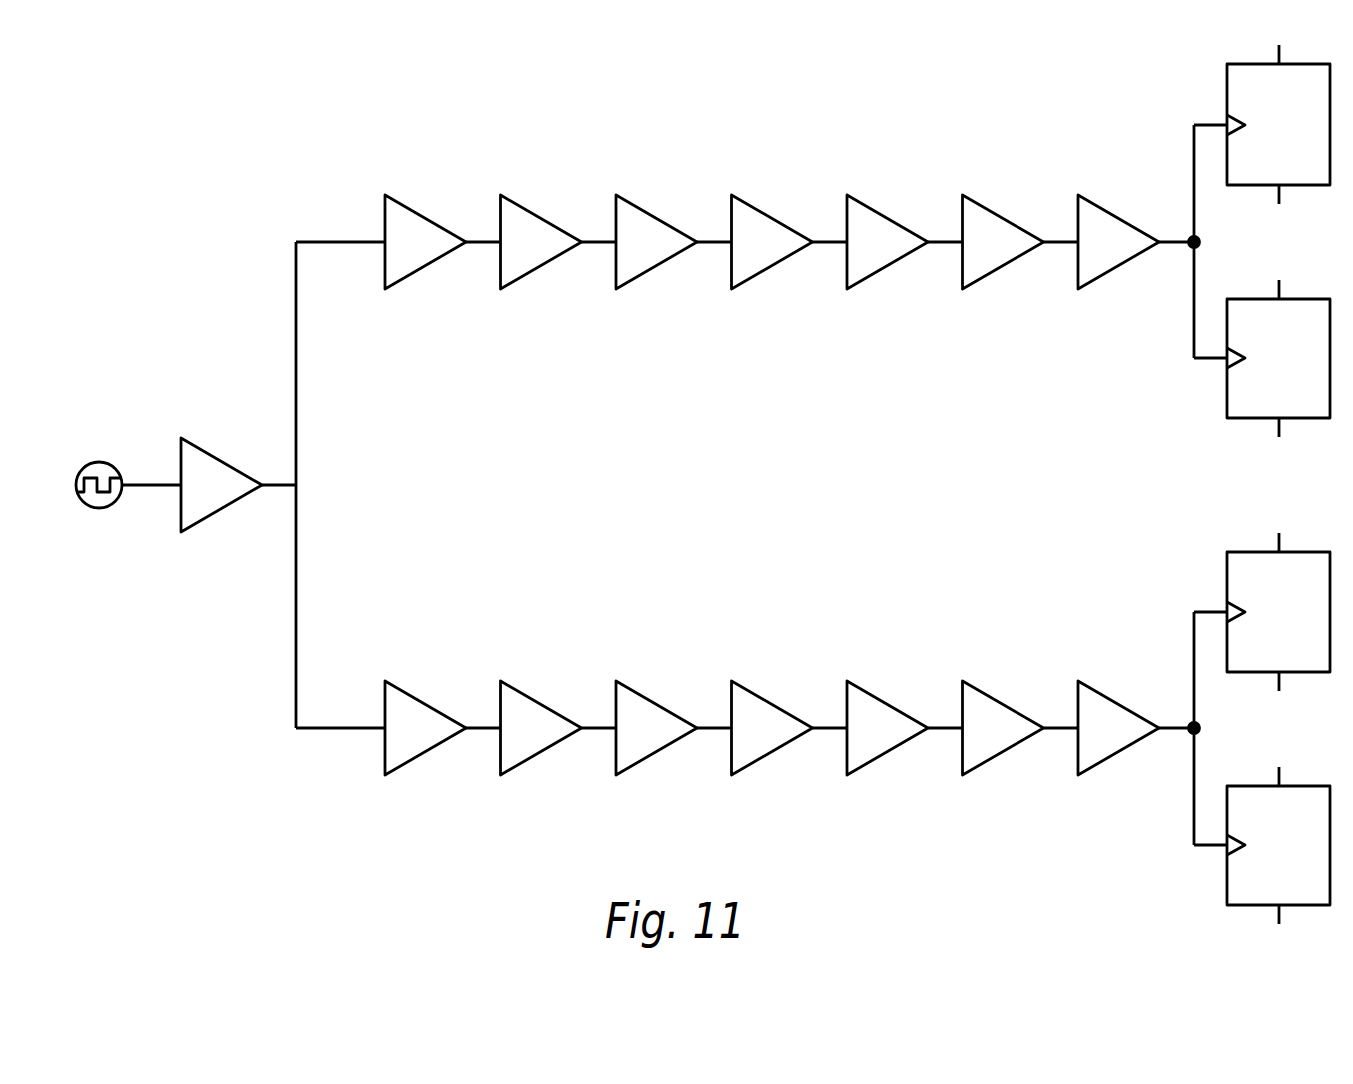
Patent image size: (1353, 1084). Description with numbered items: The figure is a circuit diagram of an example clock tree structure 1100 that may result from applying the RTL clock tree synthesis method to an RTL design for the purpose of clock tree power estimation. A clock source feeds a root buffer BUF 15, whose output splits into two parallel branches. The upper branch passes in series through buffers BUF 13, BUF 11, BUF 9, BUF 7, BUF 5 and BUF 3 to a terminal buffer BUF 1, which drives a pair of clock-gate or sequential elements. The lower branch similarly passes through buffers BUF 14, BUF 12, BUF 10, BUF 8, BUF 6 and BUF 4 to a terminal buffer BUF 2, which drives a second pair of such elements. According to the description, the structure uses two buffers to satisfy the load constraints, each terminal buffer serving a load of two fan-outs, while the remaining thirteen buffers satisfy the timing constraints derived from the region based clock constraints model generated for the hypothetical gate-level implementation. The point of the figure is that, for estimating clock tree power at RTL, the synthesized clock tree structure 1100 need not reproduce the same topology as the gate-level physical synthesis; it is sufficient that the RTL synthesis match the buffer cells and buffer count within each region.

The clock tree structure 1100 is at (207, 156).
The buffer BUF1 1 is at (1118, 242).
The buffer BUF2 2 is at (1118, 728).
The buffer BUF3 3 is at (1003, 242).
The buffer BUF4 4 is at (1003, 728).
The buffer BUF5 5 is at (887, 242).
The buffer BUF6 6 is at (887, 728).
The buffer BUF7 7 is at (772, 242).
The buffer BUF8 8 is at (772, 728).
The buffer BUF9 9 is at (656, 242).
The buffer BUF10 10 is at (656, 728).
The buffer BUF11 11 is at (541, 242).
The buffer BUF12 12 is at (541, 728).
The buffer BUF13 13 is at (425, 242).
The buffer BUF14 14 is at (425, 728).
The buffer BUF15 15 is at (221, 485).